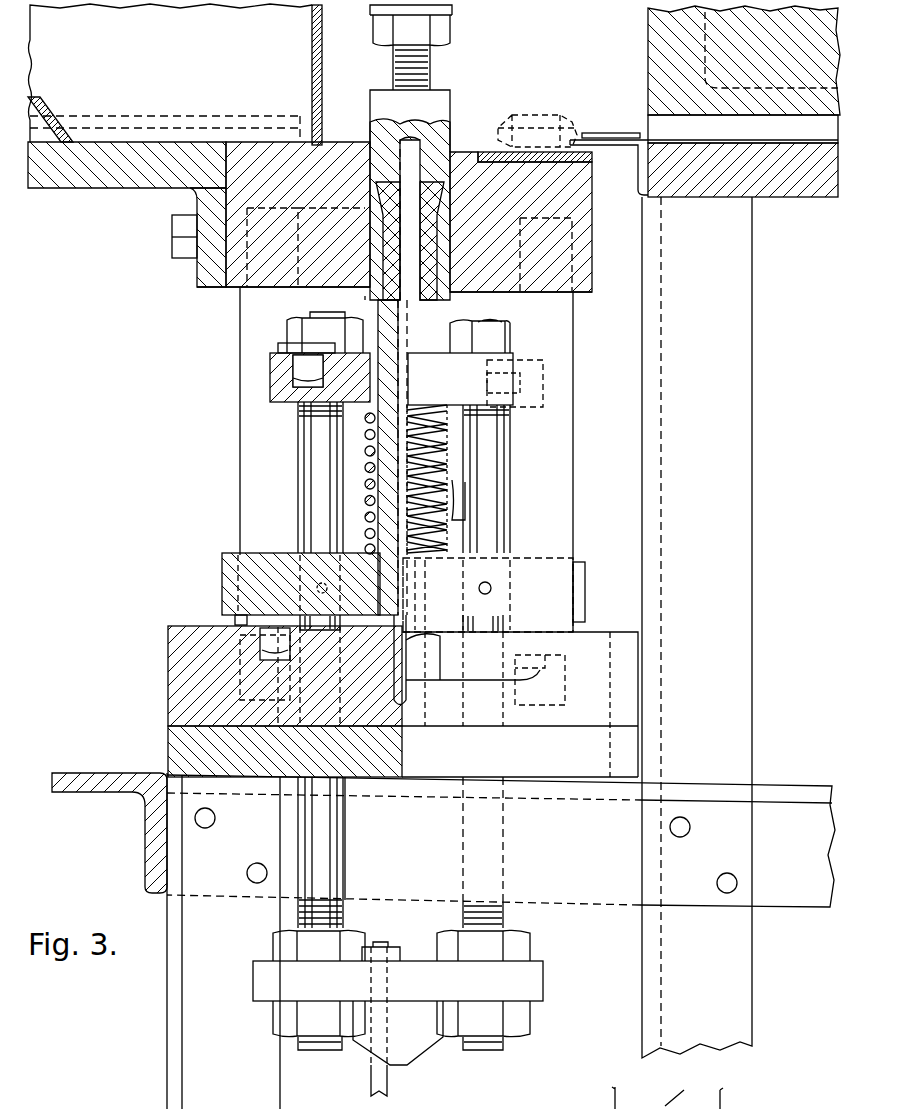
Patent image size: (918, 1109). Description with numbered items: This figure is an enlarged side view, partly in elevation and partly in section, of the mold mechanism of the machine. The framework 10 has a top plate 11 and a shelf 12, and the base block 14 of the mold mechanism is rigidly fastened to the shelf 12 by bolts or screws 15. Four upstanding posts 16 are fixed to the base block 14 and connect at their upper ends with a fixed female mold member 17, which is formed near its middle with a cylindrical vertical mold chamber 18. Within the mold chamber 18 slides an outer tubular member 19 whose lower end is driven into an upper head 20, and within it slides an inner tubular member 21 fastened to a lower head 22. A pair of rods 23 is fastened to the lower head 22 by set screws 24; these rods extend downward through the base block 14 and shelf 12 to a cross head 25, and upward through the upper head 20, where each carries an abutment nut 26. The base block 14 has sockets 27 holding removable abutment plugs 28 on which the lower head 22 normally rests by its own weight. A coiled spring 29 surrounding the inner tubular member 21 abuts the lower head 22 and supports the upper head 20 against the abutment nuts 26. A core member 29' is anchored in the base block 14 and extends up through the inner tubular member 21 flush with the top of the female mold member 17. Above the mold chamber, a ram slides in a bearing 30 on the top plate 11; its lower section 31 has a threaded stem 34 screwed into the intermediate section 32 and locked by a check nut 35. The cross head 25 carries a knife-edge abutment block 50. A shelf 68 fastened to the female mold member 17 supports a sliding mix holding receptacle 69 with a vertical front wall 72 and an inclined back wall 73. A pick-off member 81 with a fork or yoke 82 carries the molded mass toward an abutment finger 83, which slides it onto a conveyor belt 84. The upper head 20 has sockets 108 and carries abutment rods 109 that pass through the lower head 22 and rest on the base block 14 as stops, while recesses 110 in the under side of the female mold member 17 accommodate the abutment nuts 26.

The framework 10 is at (752, 348).
The top plate 11 is at (782, 197).
The shelf 12 is at (403, 751).
The base block 14 is at (635, 700).
The bolts or screws 15 is at (434, 665).
The upstanding posts 16 is at (240, 462).
The female mold member 17 is at (255, 187).
The mold chamber 18 is at (470, 210).
The outer tubular member 19 is at (365, 296).
The upper head 20 is at (270, 395).
The inner tubular member 21 is at (400, 430).
The lower head 22 is at (222, 558).
The rods 23 is at (320, 430).
The set screws 24 is at (490, 584).
The cross head 25 is at (437, 976).
The abutment nut 26 is at (287, 330).
The sockets 27 is at (262, 650).
The abutment plug 28 is at (235, 617).
The coiled spring 29 is at (348, 479).
The core member 29' is at (313, 483).
The bearing 30 is at (648, 30).
The lower section 31 is at (452, 95).
The intermediate section 32 is at (452, 10).
The threaded stem 34 is at (430, 68).
The check nut 35 is at (452, 35).
The knife-edge abutment block 50 is at (395, 1030).
The shelf 68 is at (113, 189).
The mix holding receptacle 69 is at (171, 73).
The front wall 72 is at (312, 30).
The back wall 73 is at (52, 112).
The pick-off member 81 is at (743, 129).
The fork or yoke 82 is at (599, 132).
The abutment finger 83 is at (609, 167).
The conveyor belt 84 is at (487, 153).
The sockets 108 is at (293, 375).
The abutment rods 109 is at (278, 348).
The recesses 110 is at (240, 263).